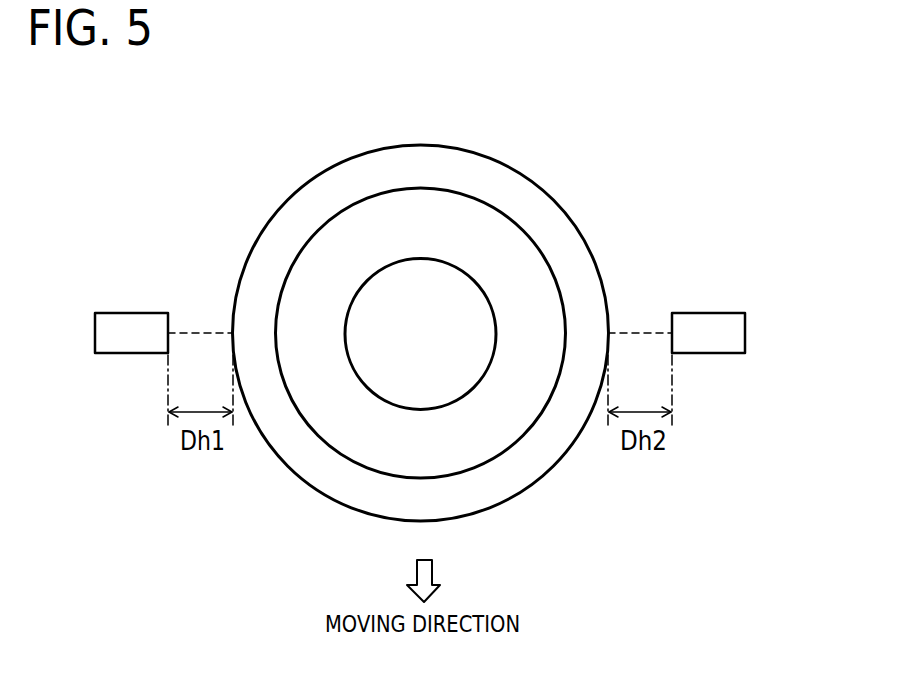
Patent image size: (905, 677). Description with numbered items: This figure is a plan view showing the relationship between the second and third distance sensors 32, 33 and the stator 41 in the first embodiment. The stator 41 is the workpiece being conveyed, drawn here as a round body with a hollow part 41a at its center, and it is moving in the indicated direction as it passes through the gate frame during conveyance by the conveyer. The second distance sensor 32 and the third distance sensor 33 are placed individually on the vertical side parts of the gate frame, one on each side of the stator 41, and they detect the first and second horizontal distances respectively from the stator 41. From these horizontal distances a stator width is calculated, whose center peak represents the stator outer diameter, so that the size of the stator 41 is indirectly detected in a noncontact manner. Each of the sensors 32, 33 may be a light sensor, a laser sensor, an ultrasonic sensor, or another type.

The stator 41 is at (520, 170).
The hollow part 41a is at (410, 315).
The second distance sensor 32 is at (128, 313).
The third distance sensor 33 is at (708, 313).